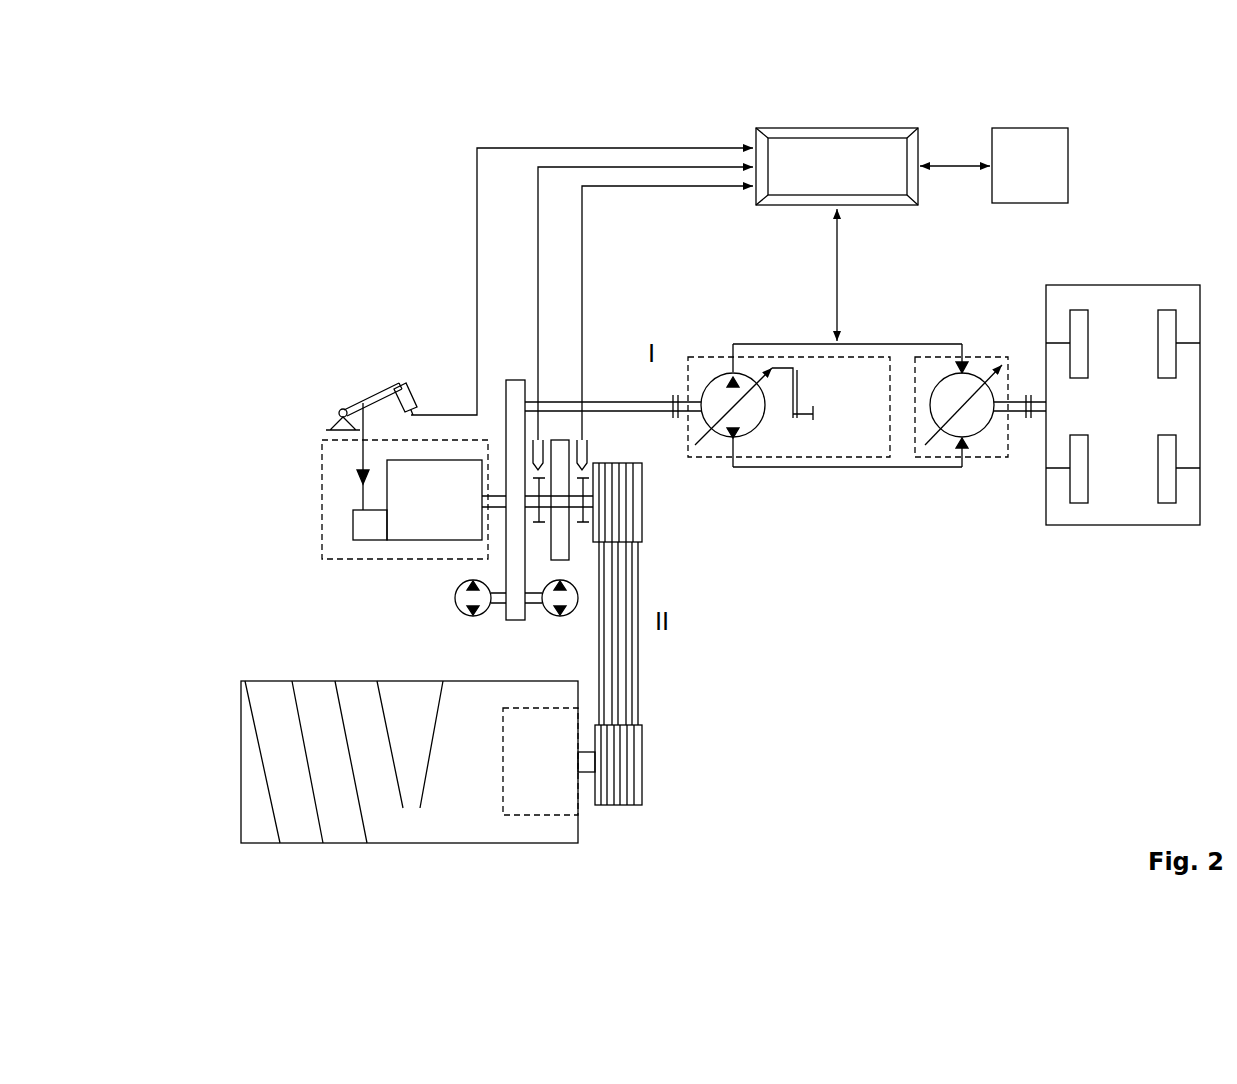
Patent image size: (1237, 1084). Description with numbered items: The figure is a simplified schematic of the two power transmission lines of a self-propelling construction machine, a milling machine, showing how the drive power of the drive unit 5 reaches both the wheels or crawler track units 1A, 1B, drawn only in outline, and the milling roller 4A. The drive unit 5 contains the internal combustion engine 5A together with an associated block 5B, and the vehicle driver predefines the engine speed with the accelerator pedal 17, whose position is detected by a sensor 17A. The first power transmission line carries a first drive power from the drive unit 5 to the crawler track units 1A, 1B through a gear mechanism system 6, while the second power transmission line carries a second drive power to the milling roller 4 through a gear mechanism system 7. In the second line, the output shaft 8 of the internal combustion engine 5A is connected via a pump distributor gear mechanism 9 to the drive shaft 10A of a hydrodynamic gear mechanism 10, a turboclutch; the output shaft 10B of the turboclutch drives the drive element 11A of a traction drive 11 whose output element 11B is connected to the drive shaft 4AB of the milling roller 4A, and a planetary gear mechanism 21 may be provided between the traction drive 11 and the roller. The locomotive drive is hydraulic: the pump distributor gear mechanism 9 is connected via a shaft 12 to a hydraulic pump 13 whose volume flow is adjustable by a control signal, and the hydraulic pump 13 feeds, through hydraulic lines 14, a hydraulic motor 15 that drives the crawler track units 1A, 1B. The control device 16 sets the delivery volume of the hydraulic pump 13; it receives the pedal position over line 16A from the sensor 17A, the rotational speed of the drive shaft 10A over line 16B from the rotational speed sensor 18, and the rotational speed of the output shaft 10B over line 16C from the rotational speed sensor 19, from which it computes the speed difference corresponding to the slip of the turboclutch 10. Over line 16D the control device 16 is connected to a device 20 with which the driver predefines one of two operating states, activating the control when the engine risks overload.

The crawler track unit 1A is at (1079, 310).
The crawler track unit 1B is at (1079, 503).
The milling roller 4 is at (210, 795).
The milling roller 4A is at (275, 681).
The drive shaft of the milling roller 4AB is at (588, 773).
The drive unit 5 is at (300, 516).
The internal combustion engine 5A is at (415, 541).
The motor controller 5B is at (368, 541).
The gear mechanism system 6 is at (718, 330).
The gear mechanism system 7 is at (684, 656).
The output shaft 8 is at (503, 493).
The pump distributor gear mechanism 9 is at (504, 612).
The hydrodynamic gear mechanism 10 is at (570, 547).
The drive shaft 10A is at (557, 500).
The output shaft 10B is at (587, 498).
The traction drive 11 is at (641, 690).
The drive element 11A is at (644, 478).
The output element 11B is at (644, 767).
The shaft 12 is at (606, 400).
The hydraulic pump 13 is at (757, 437).
The hydraulic lines 14 is at (920, 345).
The hydraulic motor 15 is at (978, 437).
The control device 16 is at (883, 207).
The line 16A is at (477, 190).
The line 16B is at (631, 170).
The line 16C is at (703, 189).
The line 16D is at (955, 152).
The accelerator pedal 17 is at (366, 393).
The sensor 17A is at (414, 396).
The rotational speed sensor 18 is at (541, 438).
The rotational speed sensor 19 is at (589, 460).
The device for predefining two operating states 20 is at (1069, 166).
The planetary gear mechanism 21 is at (533, 815).